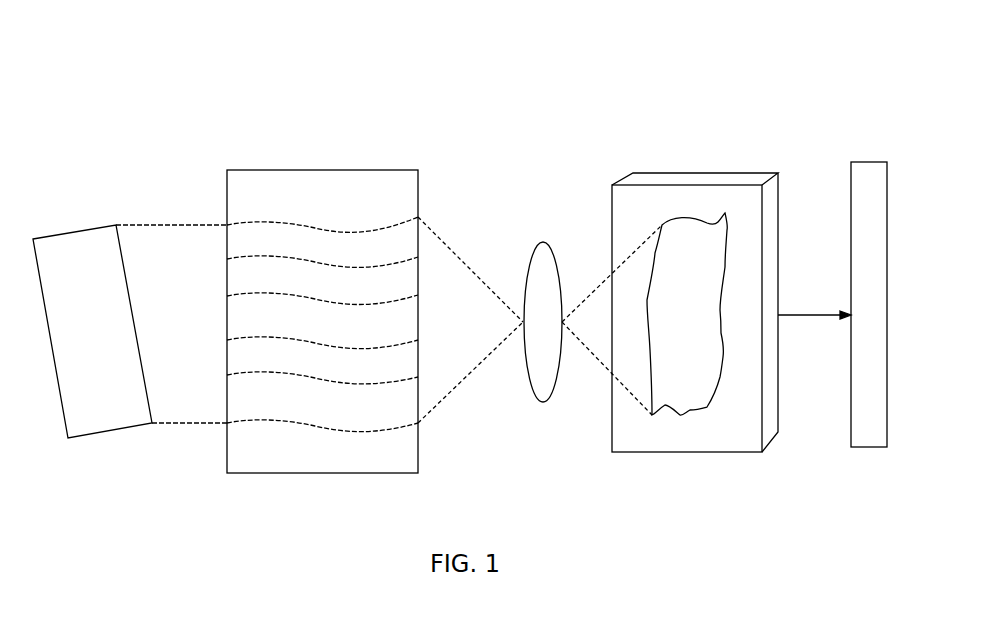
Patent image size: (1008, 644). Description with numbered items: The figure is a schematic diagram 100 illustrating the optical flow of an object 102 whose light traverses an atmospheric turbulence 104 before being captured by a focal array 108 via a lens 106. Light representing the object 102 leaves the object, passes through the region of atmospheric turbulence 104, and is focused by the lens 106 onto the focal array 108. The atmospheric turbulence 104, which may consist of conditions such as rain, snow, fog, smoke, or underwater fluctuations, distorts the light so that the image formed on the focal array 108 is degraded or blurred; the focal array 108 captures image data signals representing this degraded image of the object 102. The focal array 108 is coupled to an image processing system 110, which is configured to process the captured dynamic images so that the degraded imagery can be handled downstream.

The schematic diagram 100 is at (276, 120).
The object 102 is at (122, 428).
The atmospheric turbulence 104 is at (278, 473).
The lens 106 is at (535, 392).
The focal array 108 is at (638, 452).
The image processing system 110 is at (853, 447).